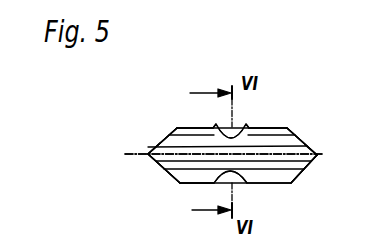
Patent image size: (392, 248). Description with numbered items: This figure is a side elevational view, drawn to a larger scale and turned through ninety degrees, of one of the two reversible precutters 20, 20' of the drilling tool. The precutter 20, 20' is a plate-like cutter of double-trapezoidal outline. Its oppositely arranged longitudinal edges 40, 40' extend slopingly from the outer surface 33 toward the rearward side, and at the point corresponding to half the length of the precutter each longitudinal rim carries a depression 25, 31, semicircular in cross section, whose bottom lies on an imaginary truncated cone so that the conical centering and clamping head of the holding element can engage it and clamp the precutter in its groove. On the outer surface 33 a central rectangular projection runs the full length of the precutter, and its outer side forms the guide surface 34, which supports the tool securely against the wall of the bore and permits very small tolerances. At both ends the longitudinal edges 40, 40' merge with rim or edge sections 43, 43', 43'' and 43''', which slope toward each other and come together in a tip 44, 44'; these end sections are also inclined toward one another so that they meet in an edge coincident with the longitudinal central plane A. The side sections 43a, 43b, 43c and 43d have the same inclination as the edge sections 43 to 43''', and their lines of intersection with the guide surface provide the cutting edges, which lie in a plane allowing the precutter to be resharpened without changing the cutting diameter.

The reversible precutter 20 is at (200, 150).
The reversible precutter 20' is at (211, 150).
The depression 25 is at (240, 183).
The depression 31 is at (233, 137).
The outer surface 33 is at (171, 133).
The guide surface 34 is at (267, 153).
The longitudinal edge 40 is at (193, 111).
The longitudinal edge 40' is at (183, 201).
The edge section 43 is at (315, 128).
The edge section 43' is at (304, 185).
The edge section 43'' is at (147, 185).
The edge section 43''' is at (138, 124).
The side section 43a is at (314, 152).
The side section 43b is at (312, 161).
The side section 43c is at (156, 162).
The side section 43d is at (148, 147).
The tip 44 is at (122, 162).
The tip 44' is at (339, 157).
The longitudinal central plane A is at (223, 126).